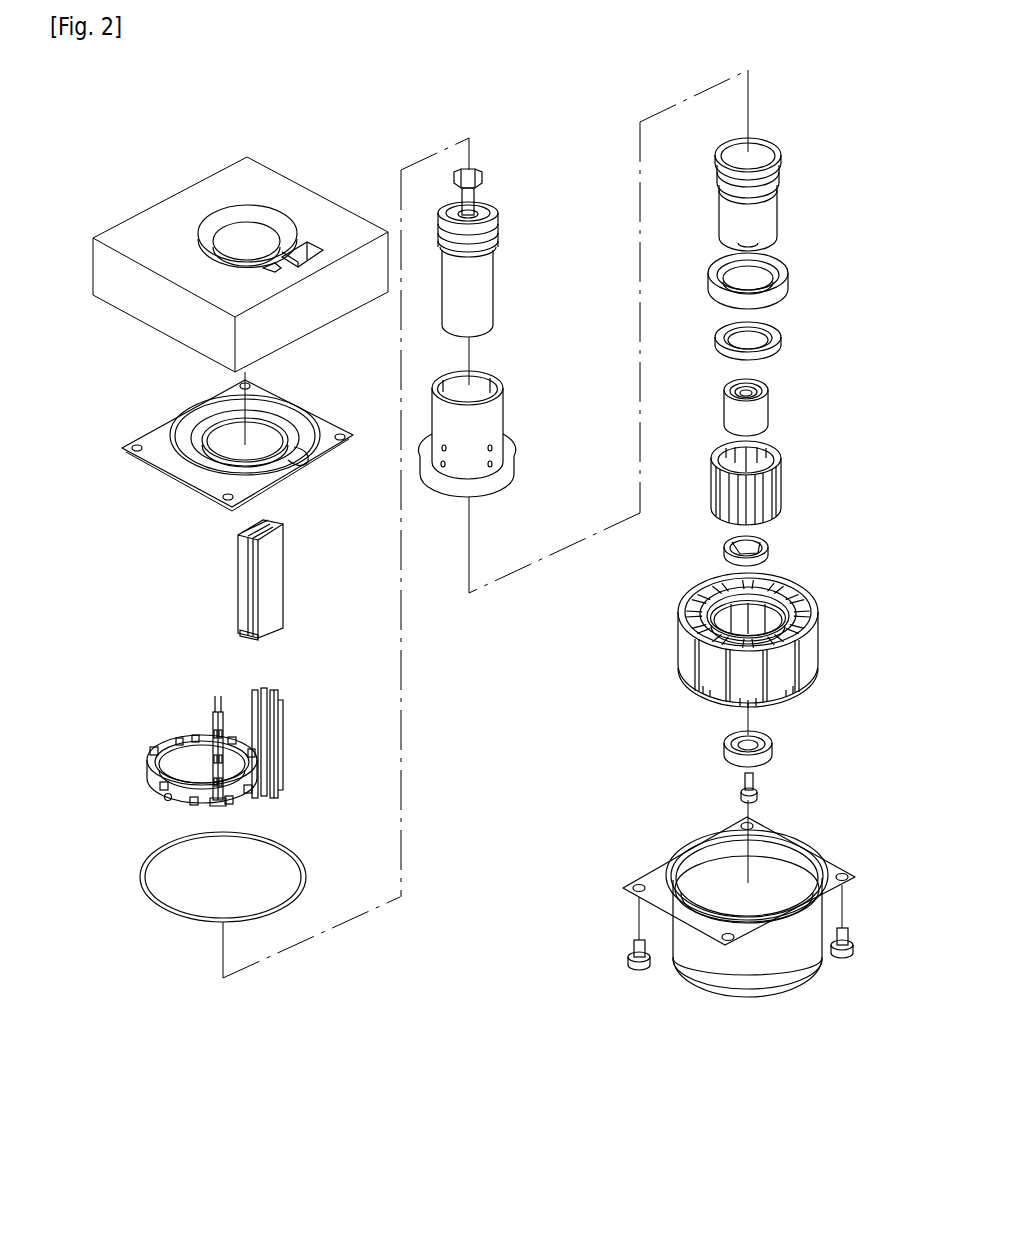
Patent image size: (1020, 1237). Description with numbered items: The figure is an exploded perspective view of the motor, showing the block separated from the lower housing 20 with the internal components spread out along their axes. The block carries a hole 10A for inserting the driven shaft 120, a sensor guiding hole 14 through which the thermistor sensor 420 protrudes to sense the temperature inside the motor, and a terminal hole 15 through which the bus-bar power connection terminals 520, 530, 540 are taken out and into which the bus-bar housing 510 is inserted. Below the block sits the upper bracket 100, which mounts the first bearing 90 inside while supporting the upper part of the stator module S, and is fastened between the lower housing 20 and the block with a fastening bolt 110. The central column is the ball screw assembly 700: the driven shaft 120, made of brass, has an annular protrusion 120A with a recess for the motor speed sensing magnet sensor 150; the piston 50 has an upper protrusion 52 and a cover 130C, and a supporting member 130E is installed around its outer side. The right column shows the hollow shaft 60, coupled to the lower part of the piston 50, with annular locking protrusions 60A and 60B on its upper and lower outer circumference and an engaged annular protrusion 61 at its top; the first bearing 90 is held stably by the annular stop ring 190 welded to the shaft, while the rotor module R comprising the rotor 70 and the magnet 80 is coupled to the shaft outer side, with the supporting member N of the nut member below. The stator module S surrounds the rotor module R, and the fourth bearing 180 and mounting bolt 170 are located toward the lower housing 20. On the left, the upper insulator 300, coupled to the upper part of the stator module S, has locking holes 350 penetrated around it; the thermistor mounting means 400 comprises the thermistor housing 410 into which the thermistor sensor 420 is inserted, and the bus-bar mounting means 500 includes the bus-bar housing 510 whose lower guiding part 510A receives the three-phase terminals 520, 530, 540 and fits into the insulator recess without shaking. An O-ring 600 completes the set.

The hole 10A is at (232, 239).
The sensor guiding hole 14 is at (262, 268).
The terminal hole 15 is at (310, 250).
The upper bracket 100 is at (160, 479).
The bus-bar housing 510 is at (272, 575).
The lower guiding part 510A is at (248, 636).
The upper insulator 300 is at (145, 758).
The locking holes 350 is at (165, 799).
The thermistor mounting means 400 is at (155, 731).
The thermistor housing 410 is at (213, 717).
The thermistor sensor 420 is at (216, 710).
The bus-bar mounting means 500 is at (290, 721).
The bus-bar power connection terminal 520 is at (288, 704).
The bus-bar power connection terminal 530 is at (253, 692).
The bus-bar power connection terminal 540 is at (264, 688).
The O-ring 600 is at (156, 896).
The ball screw assembly 700 is at (526, 318).
The motor speed sensing magnet sensor 150 is at (504, 173).
The annular protrusion 120A is at (483, 176).
The driven shaft 120 is at (476, 201).
The cover 130C is at (497, 222).
The protrusion 52 is at (497, 250).
The piston 50 is at (494, 297).
The supporting member 130E is at (493, 438).
The hollow shaft 60 is at (747, 194).
The engaged annular protrusion 61 is at (782, 155).
The annular locking protrusion 60A is at (718, 180).
The annular locking protrusion 60B is at (722, 212).
The first bearing 90 is at (789, 276).
The annular stop ring 190 is at (782, 340).
The rotor module R is at (791, 452).
The rotor 70 is at (769, 401).
The magnet 80 is at (773, 483).
The supporting member N is at (770, 547).
The stator module S is at (818, 642).
The fourth bearing 180 is at (775, 748).
The mounting bolt 170 is at (760, 780).
The lower housing 20 is at (762, 997).
The fastening bolt 110 is at (639, 970).